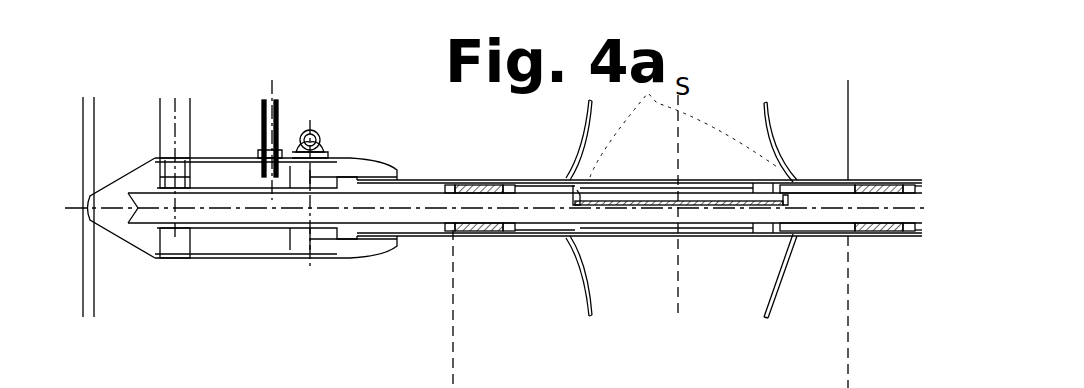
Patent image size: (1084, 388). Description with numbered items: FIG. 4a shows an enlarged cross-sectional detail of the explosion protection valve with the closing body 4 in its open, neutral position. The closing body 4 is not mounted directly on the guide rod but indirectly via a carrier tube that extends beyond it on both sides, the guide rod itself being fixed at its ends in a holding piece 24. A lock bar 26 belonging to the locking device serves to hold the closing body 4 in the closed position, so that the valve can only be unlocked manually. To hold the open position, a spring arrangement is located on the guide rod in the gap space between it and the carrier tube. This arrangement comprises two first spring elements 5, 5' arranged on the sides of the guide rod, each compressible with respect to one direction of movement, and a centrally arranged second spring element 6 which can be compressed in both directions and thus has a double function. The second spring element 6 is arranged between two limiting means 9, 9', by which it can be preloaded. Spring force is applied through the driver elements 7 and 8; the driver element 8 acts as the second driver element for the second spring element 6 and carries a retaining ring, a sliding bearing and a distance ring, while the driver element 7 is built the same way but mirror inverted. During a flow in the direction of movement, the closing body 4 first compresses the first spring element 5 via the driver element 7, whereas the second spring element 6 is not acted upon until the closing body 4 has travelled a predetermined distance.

The closing body 4 is at (582, 125).
The first spring element 5 is at (525, 263).
The first spring element 5' is at (913, 253).
The second spring element 6 is at (703, 238).
The driver element 7 is at (476, 178).
The driver element 8 is at (877, 178).
The limiting means 9 is at (589, 295).
The limiting means 9' is at (777, 229).
The holding piece 24 is at (142, 236).
The lock bar 26 is at (275, 97).